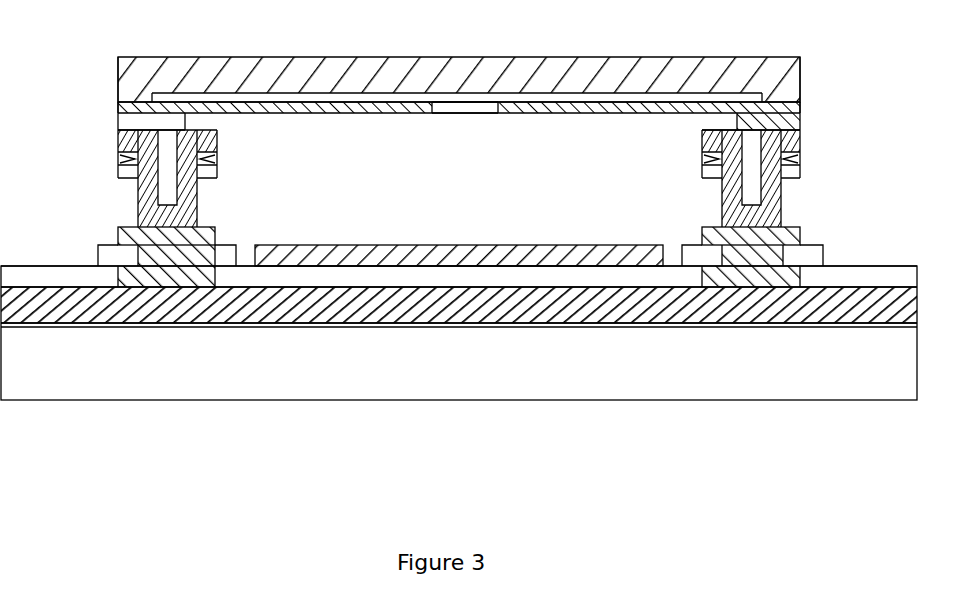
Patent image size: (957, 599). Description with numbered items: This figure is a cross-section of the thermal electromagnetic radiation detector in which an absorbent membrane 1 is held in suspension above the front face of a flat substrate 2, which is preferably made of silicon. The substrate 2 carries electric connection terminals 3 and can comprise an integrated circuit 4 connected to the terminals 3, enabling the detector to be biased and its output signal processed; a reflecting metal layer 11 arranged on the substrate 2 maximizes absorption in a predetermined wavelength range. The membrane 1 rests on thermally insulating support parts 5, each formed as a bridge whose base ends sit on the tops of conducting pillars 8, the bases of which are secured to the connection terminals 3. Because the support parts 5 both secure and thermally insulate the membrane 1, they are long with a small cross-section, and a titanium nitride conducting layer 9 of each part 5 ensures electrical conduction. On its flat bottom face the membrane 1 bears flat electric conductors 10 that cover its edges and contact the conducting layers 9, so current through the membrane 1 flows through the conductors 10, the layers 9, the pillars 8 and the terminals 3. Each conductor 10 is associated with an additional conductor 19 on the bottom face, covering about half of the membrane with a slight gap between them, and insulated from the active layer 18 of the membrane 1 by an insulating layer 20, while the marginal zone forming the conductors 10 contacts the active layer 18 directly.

The absorbent membrane 1 is at (442, 149).
The substrate 2 is at (528, 393).
The electric connection terminals 3 is at (770, 248).
The integrated circuit 4 is at (615, 323).
The thermally insulating support parts 5 is at (90, 124).
The conducting pillars 8 is at (138, 212).
The conducting layer 9 is at (118, 113).
The flat electric conductors 10 is at (817, 107).
The reflecting metal layer 11 is at (490, 247).
The active layer 18 is at (385, 57).
The additional conductors 19 is at (313, 112).
The insulating layer 20 is at (465, 113).